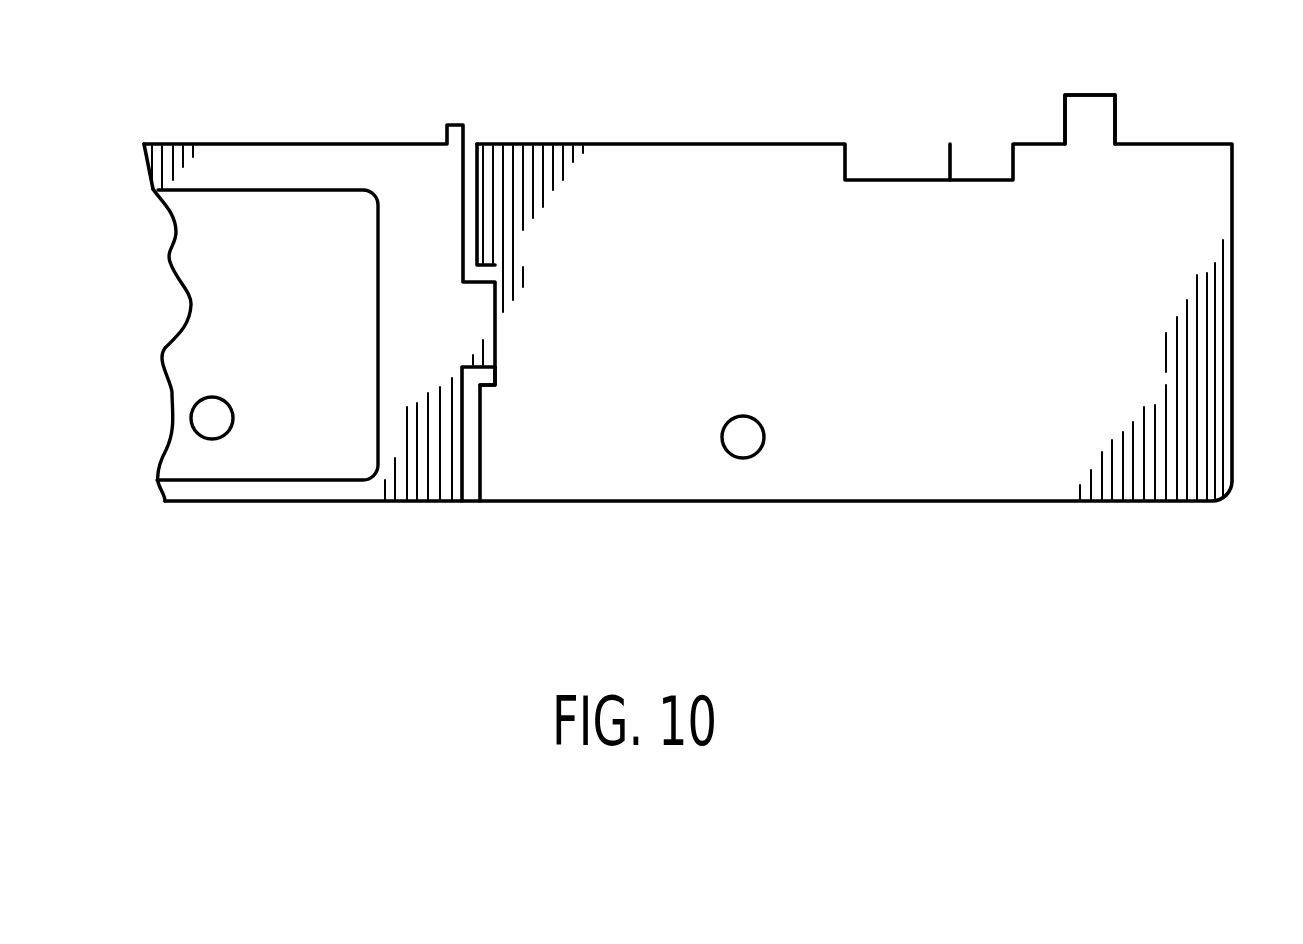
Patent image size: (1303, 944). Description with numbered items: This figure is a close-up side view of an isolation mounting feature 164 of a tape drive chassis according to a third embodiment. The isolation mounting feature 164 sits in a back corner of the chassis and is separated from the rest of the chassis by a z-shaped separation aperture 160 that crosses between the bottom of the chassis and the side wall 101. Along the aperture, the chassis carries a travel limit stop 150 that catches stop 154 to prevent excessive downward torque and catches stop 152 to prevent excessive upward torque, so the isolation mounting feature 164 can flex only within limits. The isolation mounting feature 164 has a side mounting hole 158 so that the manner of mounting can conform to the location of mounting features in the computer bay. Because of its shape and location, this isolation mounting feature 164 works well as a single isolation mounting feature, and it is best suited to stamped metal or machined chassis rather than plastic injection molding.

The side wall 101 is at (367, 168).
The travel limit stop 150 is at (472, 330).
The stop 152 is at (485, 390).
The stop 154 is at (485, 260).
The side mounting hole 158 is at (755, 452).
The z-shaped separation aperture 160 is at (472, 497).
The isolation mounting feature 164 is at (1195, 162).